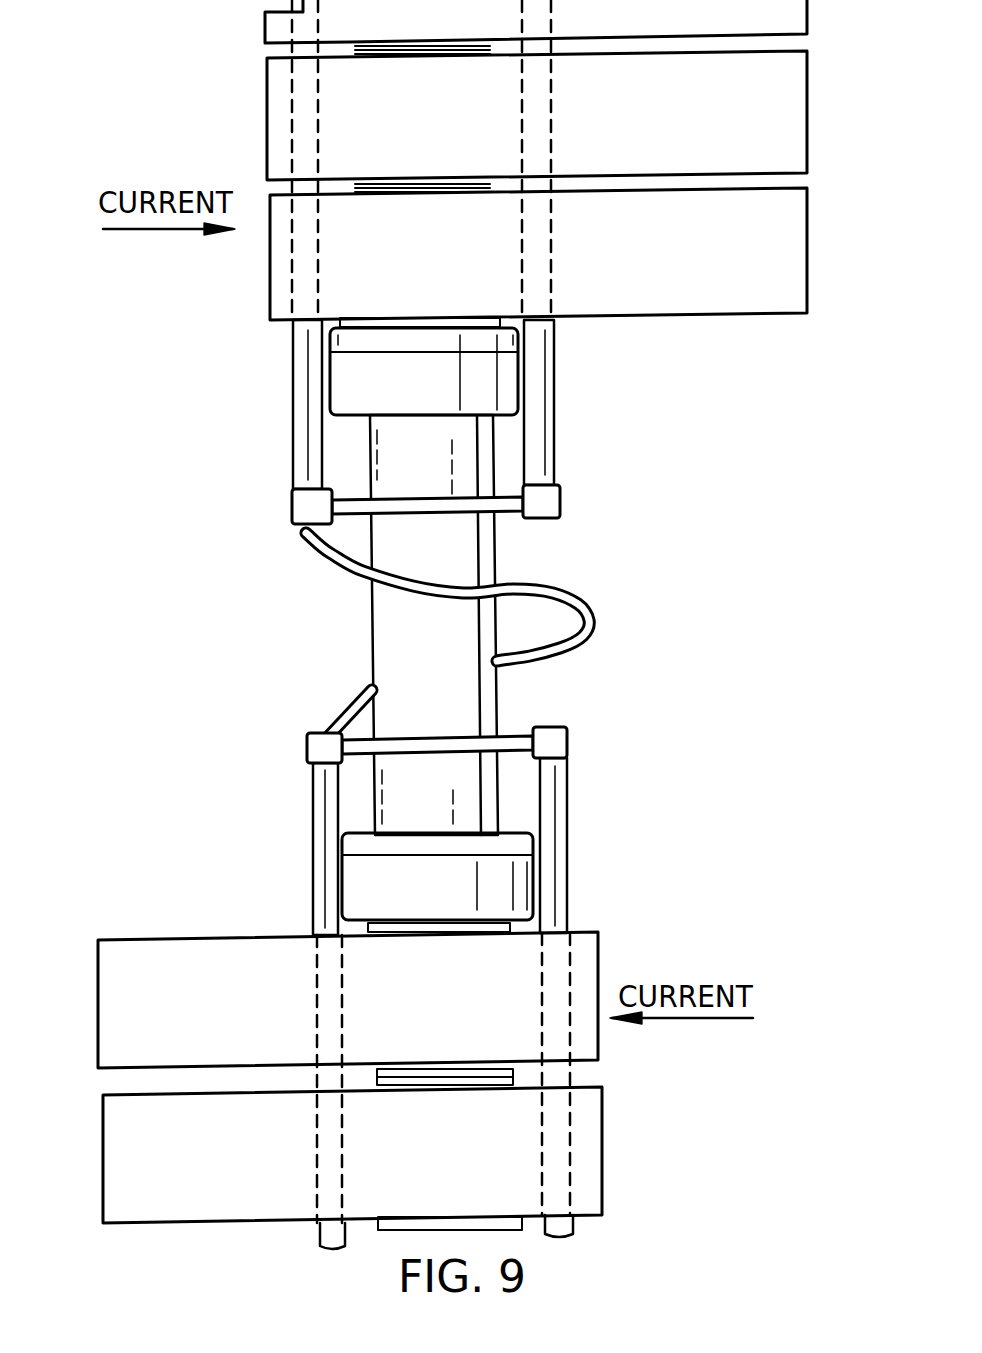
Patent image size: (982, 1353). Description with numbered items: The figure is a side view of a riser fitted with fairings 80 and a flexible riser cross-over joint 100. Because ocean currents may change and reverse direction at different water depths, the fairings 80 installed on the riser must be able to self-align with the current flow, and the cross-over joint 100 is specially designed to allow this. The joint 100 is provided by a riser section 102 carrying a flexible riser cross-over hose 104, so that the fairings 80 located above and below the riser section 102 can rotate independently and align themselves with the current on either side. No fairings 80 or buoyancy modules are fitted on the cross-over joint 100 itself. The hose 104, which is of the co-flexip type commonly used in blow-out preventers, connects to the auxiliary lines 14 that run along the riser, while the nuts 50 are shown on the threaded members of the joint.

The auxiliary lines 14 is at (300, 455).
The nuts 50 is at (560, 500).
The fairings 80 is at (708, 315).
The riser cross-over joint 100 is at (440, 624).
The riser section 102 is at (497, 707).
The flexible riser cross-over hose 104 is at (607, 613).